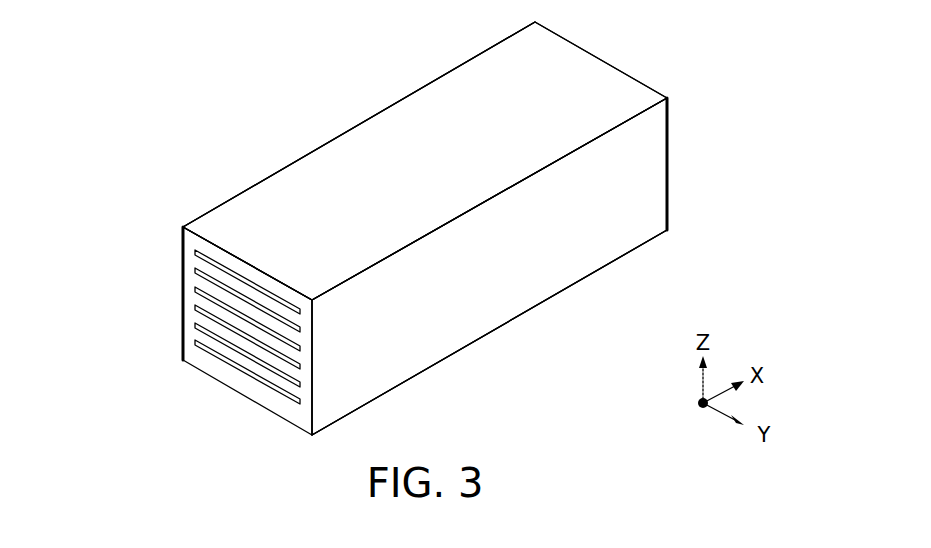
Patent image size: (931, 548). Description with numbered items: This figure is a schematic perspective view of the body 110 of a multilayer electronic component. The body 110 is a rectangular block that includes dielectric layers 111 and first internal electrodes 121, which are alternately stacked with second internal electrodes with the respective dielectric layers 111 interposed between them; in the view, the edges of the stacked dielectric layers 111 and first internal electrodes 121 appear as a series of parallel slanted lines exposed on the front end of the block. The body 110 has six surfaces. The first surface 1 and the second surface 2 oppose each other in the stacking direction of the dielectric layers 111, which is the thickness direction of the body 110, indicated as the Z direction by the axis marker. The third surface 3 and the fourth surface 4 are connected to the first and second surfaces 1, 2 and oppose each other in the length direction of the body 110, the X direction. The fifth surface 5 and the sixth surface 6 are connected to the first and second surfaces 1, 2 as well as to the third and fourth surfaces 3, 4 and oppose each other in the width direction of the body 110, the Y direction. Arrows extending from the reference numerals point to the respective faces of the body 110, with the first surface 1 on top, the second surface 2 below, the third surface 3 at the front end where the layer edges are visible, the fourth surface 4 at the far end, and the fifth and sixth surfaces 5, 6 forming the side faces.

The first surface 1 is at (376, 132).
The body 110 is at (450, 92).
The second surface 2 is at (447, 348).
The third surface 3 is at (204, 360).
The fourth surface 4 is at (623, 97).
The fifth surface 5 is at (537, 285).
The sixth surface 6 is at (284, 187).
The dielectric layer 111 is at (202, 268).
The first internal electrode 121 is at (203, 254).